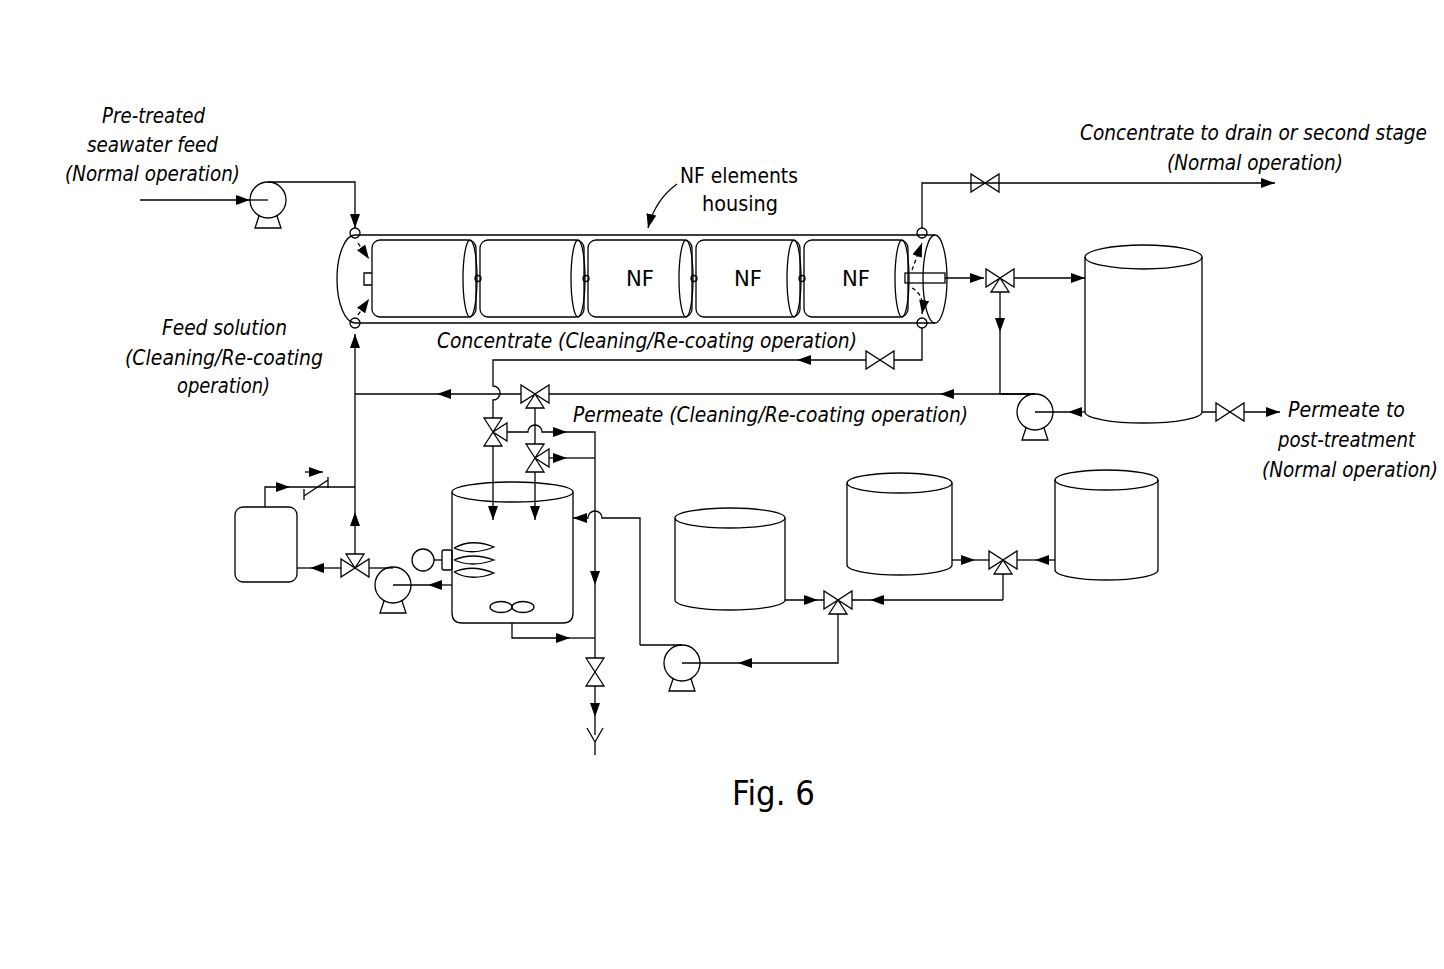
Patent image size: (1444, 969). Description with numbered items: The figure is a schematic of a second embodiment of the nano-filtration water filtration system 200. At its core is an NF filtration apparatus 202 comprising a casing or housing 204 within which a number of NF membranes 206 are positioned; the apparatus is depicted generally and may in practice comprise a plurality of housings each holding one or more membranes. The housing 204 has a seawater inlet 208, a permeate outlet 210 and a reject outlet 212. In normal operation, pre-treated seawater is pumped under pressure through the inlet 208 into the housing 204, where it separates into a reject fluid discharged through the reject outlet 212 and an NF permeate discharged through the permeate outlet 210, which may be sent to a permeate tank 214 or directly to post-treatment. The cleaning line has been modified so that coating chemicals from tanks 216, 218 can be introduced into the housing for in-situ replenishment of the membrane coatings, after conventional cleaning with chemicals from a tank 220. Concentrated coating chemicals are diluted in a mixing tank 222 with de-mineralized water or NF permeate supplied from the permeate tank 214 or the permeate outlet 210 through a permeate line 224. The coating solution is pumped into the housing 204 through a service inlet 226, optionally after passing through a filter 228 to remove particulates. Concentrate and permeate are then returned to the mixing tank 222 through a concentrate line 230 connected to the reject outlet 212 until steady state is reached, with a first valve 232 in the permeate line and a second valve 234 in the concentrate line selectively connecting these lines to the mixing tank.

The filtration system 200 is at (490, 80).
The NF filtration apparatus 202 is at (828, 228).
The housing 204 is at (440, 233).
The NF membranes 206 is at (610, 240).
The seawater inlet 208 is at (345, 238).
The permeate outlet 210 is at (945, 275).
The reject outlet 212 is at (930, 327).
The permeate tank 214 is at (1195, 306).
The coating chemical tank 216 is at (905, 478).
The coating chemical tank 218 is at (1160, 530).
The cleaning chemicals tank 220 is at (735, 512).
The mixing tank 222 is at (480, 625).
The permeate line 224 is at (1025, 432).
The service inlet 226 is at (350, 321).
The filter 228 is at (272, 583).
The concentrate line 230 is at (490, 412).
The first valve 232 is at (528, 462).
The second valve 234 is at (484, 436).